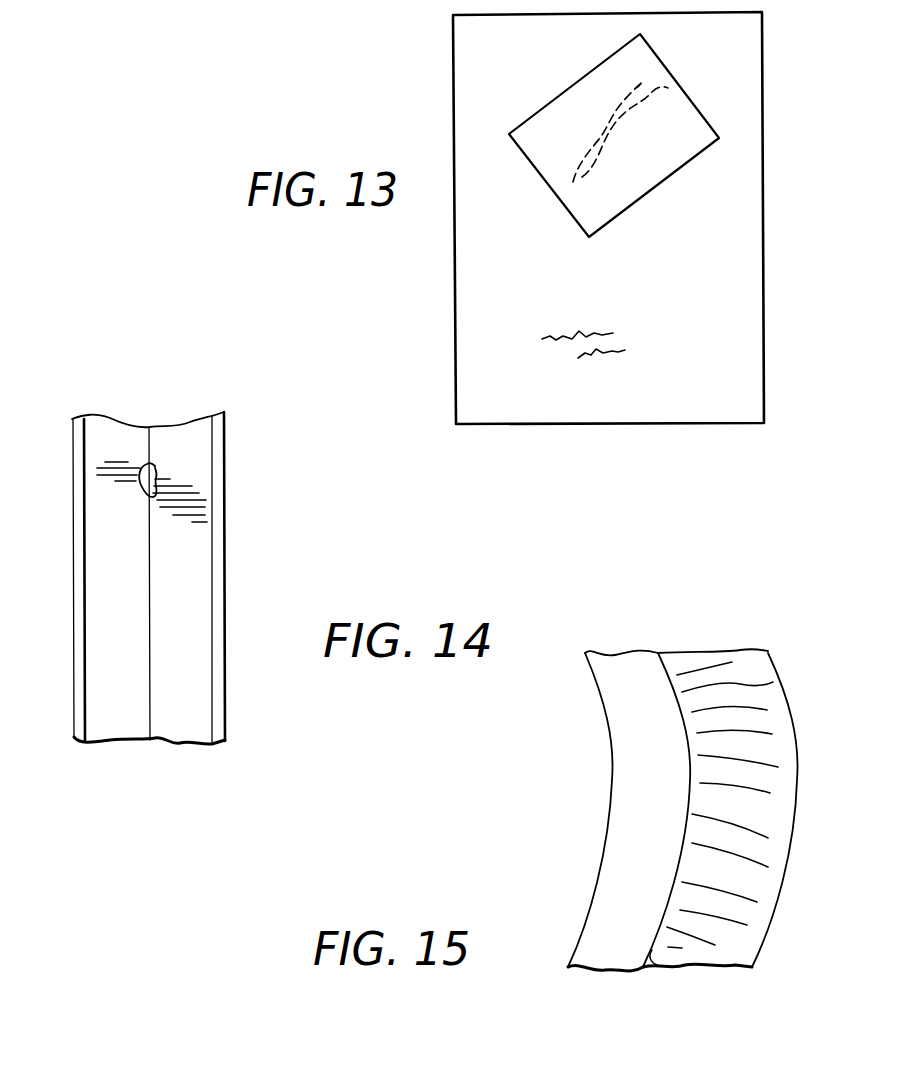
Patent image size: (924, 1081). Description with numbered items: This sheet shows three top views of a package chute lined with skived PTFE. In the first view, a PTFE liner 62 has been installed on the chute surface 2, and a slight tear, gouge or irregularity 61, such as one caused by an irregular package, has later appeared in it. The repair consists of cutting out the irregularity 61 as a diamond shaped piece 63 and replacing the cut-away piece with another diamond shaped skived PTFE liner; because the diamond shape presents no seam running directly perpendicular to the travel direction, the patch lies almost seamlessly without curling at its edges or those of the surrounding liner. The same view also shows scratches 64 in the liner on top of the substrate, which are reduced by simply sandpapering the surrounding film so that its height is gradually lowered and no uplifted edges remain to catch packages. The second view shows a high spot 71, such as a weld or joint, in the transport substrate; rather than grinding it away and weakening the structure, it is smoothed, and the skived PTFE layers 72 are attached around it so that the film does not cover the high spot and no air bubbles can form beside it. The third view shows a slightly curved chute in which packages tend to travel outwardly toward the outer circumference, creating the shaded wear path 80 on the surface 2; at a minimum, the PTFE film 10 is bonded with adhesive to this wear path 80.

In FIG. 13, the irregularity 61 is at (668, 88).
In FIG. 13, the installed PTFE liner 62 is at (746, 315).
In FIG. 13, the diamond shaped piece 63 is at (650, 188).
In FIG. 13, the scratches 64 is at (594, 357).
In FIG. 14, the high spot 71 is at (150, 470).
In FIG. 14, the skived PTFE layers 72 is at (90, 538).
In FIG. 15, the surface 2 is at (612, 906).
In FIG. 15, the PTFE film 10 is at (657, 965).
In FIG. 15, the wear path 80 is at (737, 898).